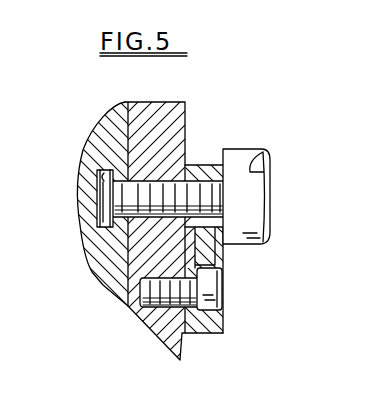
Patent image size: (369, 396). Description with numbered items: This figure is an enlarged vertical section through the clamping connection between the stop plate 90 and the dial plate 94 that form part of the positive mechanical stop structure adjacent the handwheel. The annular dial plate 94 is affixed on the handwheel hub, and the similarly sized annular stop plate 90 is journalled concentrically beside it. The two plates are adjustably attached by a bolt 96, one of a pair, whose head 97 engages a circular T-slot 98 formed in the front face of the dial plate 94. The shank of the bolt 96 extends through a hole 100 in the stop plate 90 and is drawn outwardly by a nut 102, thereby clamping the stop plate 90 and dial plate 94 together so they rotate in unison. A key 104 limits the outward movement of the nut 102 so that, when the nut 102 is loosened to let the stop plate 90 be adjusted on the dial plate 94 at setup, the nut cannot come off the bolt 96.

The stop plate 90 is at (188, 103).
The dial plate 94 is at (113, 112).
The bolt 96 is at (205, 183).
The bolt head 97 is at (108, 198).
The T-slot 98 is at (97, 170).
The hole 100 is at (139, 180).
The nut 102 is at (263, 150).
The key 104 is at (222, 262).